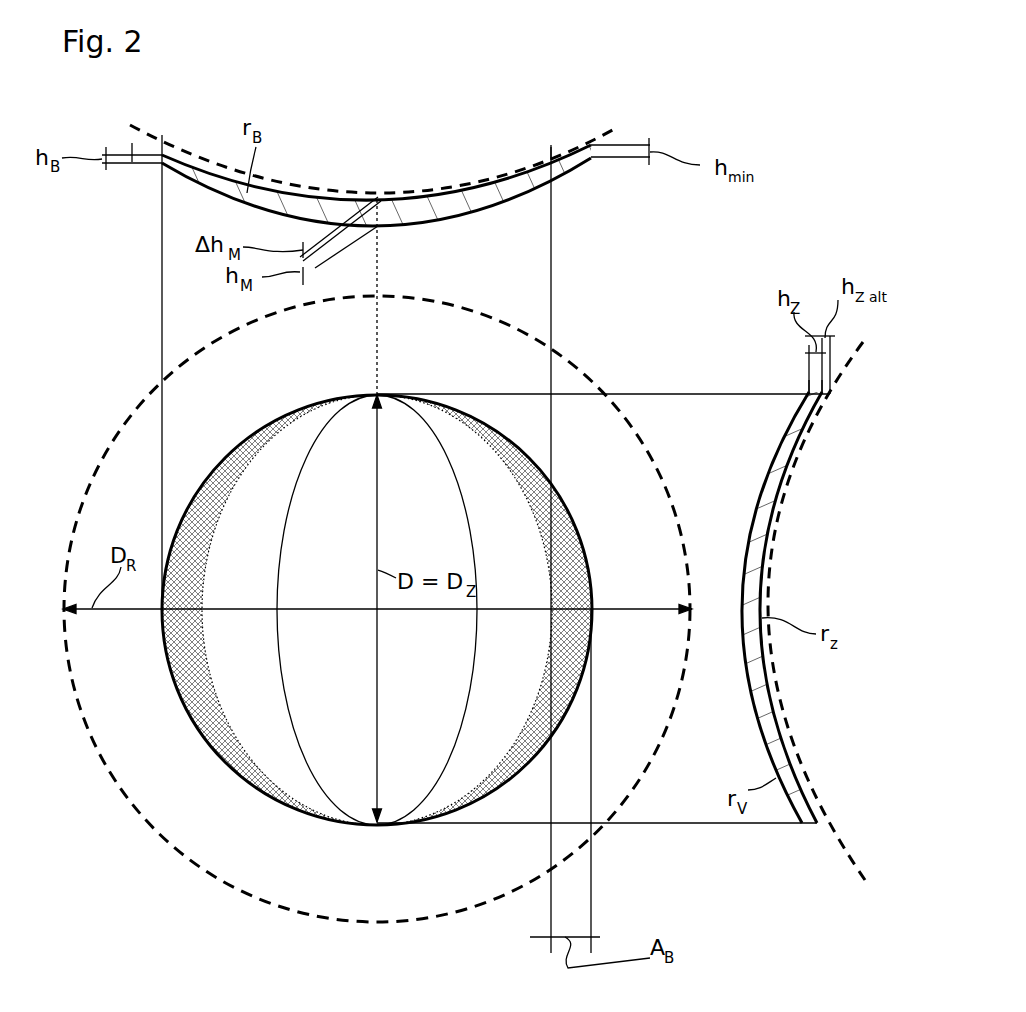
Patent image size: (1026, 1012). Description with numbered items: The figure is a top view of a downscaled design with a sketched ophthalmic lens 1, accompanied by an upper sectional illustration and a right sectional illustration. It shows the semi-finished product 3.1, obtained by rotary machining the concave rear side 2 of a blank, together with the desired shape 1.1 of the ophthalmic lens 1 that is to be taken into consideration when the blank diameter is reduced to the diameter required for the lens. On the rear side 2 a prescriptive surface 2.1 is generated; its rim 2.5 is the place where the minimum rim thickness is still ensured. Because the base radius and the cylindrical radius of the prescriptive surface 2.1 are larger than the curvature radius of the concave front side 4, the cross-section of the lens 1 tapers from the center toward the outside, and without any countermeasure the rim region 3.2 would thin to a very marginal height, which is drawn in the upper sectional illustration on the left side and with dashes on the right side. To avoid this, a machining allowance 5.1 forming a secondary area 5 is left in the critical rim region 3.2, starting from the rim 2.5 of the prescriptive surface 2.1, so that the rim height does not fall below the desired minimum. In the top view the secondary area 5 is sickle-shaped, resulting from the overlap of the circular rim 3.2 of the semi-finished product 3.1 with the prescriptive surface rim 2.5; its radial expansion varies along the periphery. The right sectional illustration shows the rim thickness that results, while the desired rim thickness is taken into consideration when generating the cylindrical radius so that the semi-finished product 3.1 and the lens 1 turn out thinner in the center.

The ophthalmic lens 1 is at (366, 815).
The desired shape of the ophthalmic lens 1.1 is at (418, 805).
The rear side 2 is at (772, 691).
The prescriptive surface 2.1 is at (265, 553).
The rim of the prescriptive surface 2.5 is at (543, 155).
The semi-finished product 3.1 is at (505, 195).
The rim region 3.2 is at (806, 390).
The front side 4 is at (748, 718).
The secondary area 5 is at (580, 123).
The machining allowance 5.1 is at (132, 150).